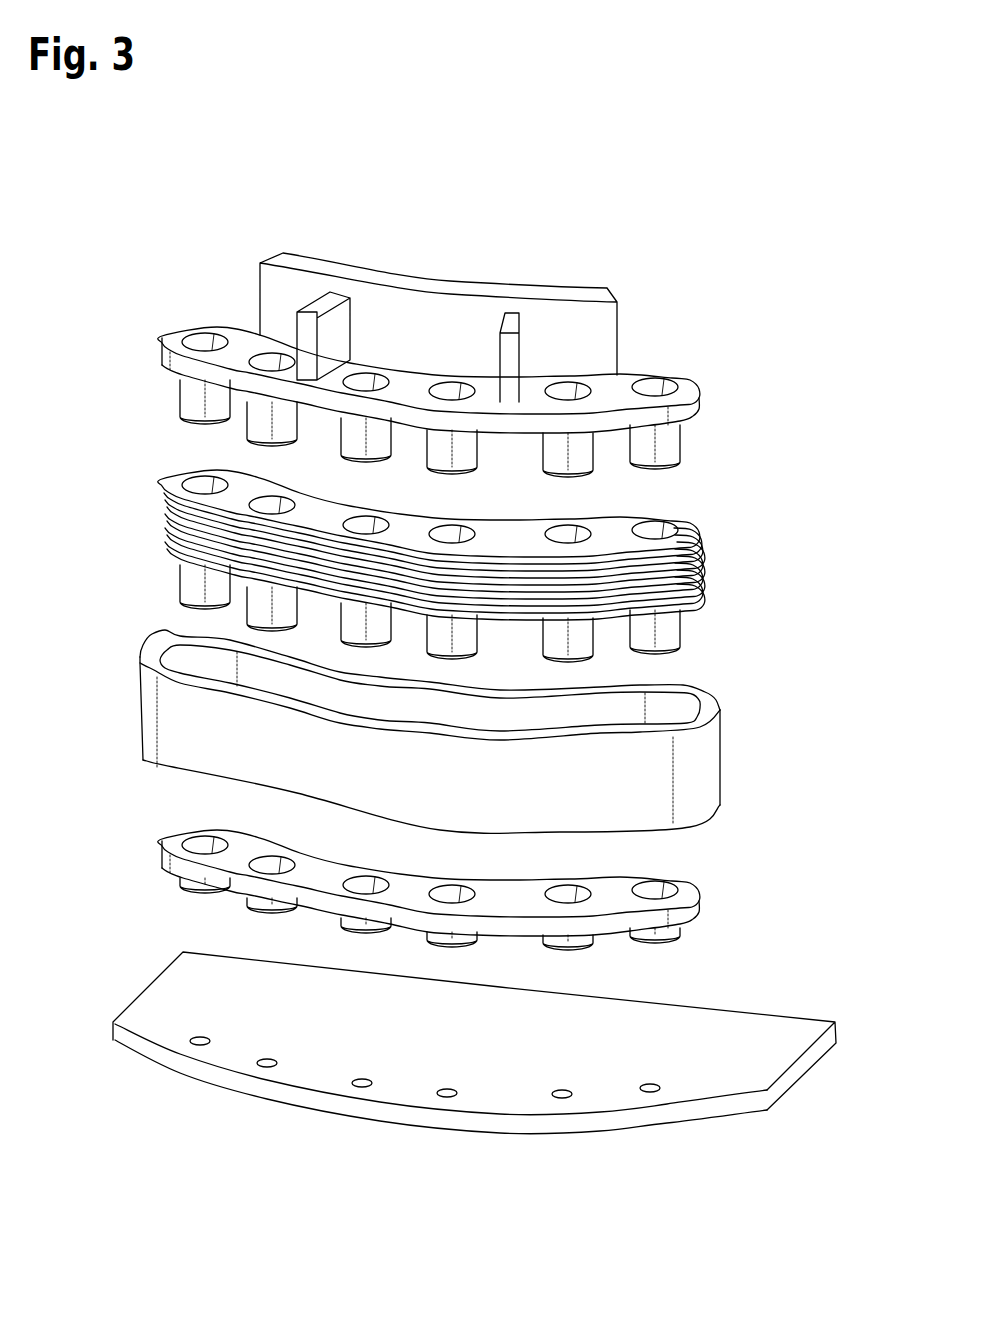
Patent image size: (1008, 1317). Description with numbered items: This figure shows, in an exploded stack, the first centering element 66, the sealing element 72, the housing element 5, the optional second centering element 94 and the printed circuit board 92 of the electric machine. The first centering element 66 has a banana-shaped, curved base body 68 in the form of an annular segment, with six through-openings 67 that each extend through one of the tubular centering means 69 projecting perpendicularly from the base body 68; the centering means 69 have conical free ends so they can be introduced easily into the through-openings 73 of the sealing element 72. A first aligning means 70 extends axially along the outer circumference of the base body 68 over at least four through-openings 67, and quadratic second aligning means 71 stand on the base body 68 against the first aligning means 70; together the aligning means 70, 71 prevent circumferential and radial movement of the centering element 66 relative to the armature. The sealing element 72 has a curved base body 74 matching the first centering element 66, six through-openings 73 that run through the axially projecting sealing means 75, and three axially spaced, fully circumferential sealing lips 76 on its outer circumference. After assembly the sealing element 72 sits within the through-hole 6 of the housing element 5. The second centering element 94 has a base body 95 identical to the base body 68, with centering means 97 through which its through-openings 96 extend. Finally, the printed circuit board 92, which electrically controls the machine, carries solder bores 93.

The first centering element 66 is at (758, 307).
The through-opening 67 is at (652, 388).
The base body 68 is at (700, 403).
The centering means 69 is at (662, 453).
The first aligning means 70 is at (453, 343).
The second aligning means 71 is at (337, 327).
The sealing element 72 is at (750, 568).
The through-opening 73 is at (653, 528).
The base body 74 is at (165, 490).
The sealing lip 76 is at (170, 530).
The sealing means 75 is at (662, 633).
The housing element 5 is at (697, 768).
The through-hole 6 is at (212, 663).
The second centering element 94 is at (750, 898).
The base body 95 is at (165, 850).
The through-opening 96 is at (653, 893).
The centering means 97 is at (185, 886).
The printed circuit board 92 is at (767, 1057).
The solder bore 93 is at (649, 1090).